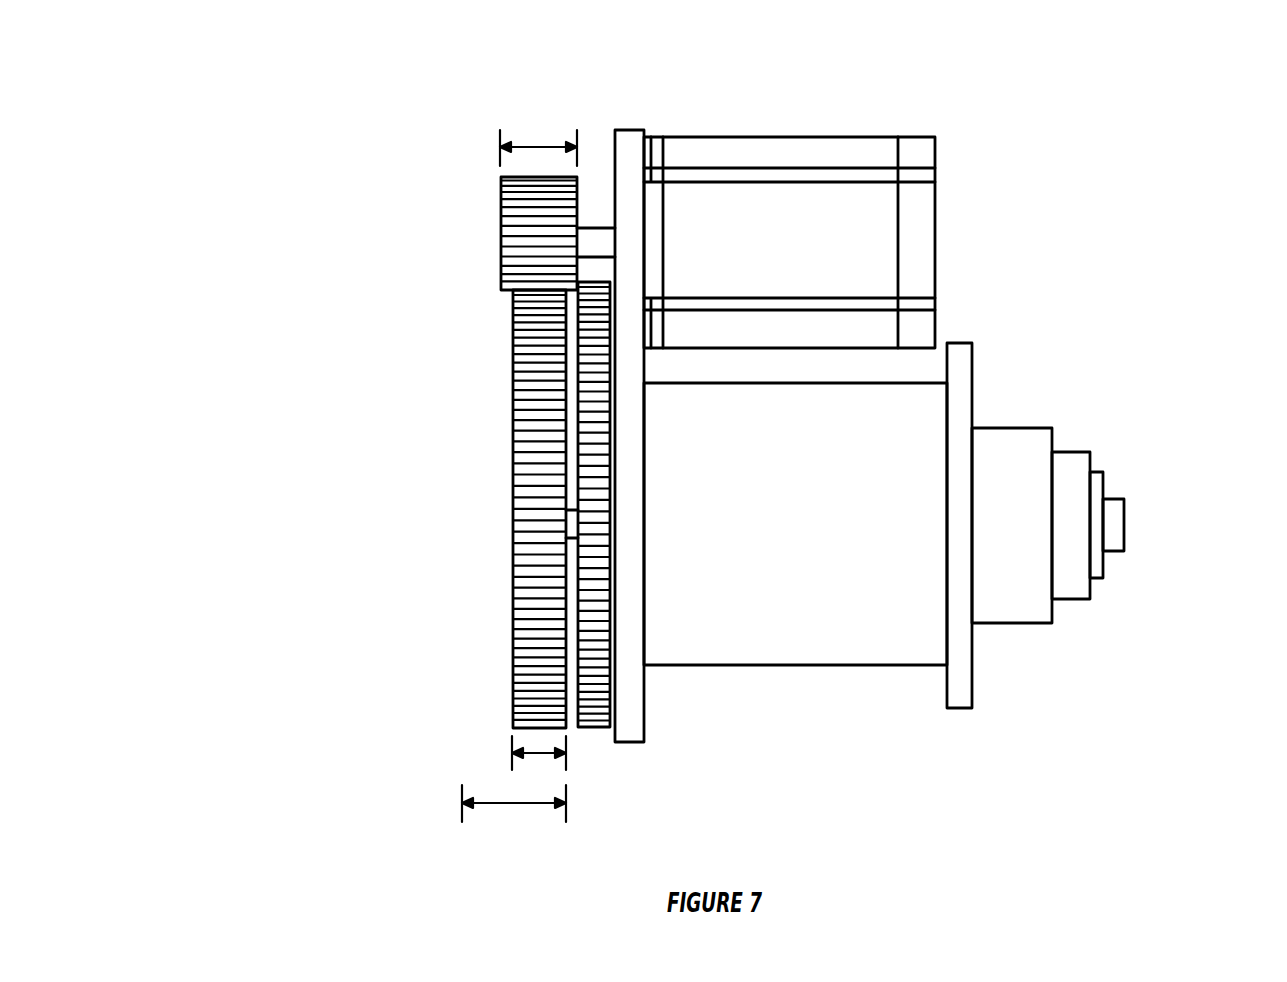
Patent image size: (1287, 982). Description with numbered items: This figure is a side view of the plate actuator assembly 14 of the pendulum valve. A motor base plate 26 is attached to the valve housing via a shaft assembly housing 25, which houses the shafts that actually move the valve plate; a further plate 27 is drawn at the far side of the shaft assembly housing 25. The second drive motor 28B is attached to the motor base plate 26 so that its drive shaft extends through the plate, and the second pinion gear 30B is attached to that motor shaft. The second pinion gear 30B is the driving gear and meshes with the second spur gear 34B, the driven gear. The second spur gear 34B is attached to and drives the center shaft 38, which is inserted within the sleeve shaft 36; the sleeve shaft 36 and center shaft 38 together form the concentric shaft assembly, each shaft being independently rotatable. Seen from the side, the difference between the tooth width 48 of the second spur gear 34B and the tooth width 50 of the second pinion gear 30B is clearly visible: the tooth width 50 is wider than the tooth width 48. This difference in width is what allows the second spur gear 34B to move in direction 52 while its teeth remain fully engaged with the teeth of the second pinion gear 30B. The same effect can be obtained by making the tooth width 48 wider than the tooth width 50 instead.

The plate actuator assembly 14 is at (1157, 151).
The shaft assembly housing 25 is at (853, 665).
The motor base plate 26 is at (628, 742).
The rear plate 27 is at (955, 708).
The second drive motor 28B is at (866, 146).
The second pinion gear 30B is at (500, 245).
The second spur gear 34B is at (512, 448).
The sleeve shaft 36 is at (1012, 427).
The center shaft 38 is at (1070, 600).
The tooth width 48 is at (540, 756).
The tooth width 50 is at (538, 147).
The direction 52 is at (514, 804).